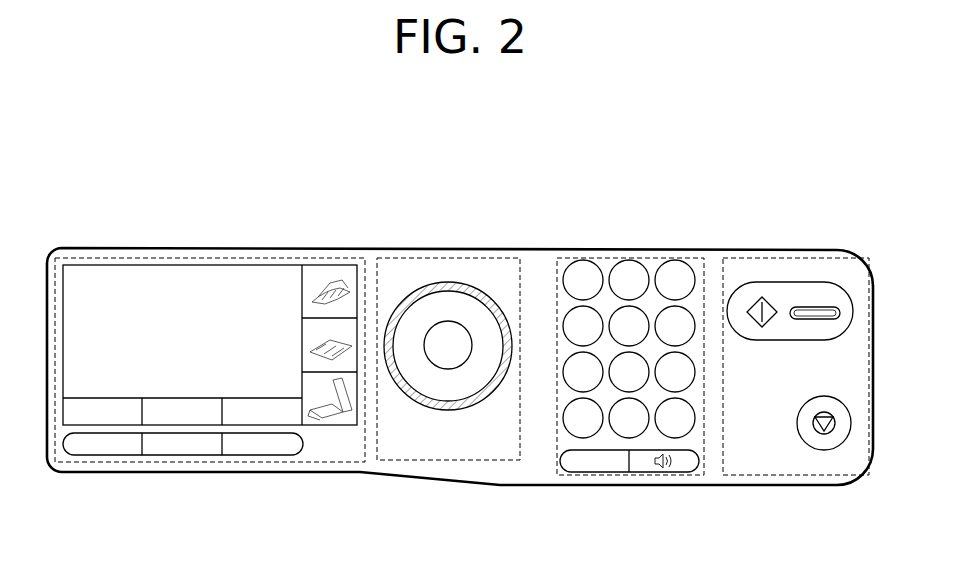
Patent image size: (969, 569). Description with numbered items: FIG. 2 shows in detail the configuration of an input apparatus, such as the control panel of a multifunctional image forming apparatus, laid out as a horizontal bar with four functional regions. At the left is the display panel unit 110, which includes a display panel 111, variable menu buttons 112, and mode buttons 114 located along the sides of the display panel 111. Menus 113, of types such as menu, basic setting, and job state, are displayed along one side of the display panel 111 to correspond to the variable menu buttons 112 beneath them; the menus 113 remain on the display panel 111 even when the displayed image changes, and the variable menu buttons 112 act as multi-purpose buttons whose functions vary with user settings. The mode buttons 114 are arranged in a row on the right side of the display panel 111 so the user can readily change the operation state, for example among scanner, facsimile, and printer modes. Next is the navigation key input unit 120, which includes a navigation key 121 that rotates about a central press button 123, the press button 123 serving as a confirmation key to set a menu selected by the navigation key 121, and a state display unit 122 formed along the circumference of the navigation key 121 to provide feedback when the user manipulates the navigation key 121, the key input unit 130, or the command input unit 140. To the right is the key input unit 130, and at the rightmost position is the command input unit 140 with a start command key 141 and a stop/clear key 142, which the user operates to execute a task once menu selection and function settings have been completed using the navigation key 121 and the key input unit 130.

The display panel unit 110 is at (294, 463).
The display panel 111 is at (126, 275).
The variable menu buttons 112 is at (245, 455).
The menus 113 is at (254, 398).
The mode buttons 114 is at (368, 398).
The navigation key input unit 120 is at (459, 462).
The navigation key 121 is at (425, 385).
The state display unit 122 is at (490, 398).
The press button 123 is at (445, 322).
The key input unit 130 is at (617, 476).
The command input unit 140 is at (771, 476).
The start command key 141 is at (842, 285).
The stop/clear key 142 is at (838, 451).